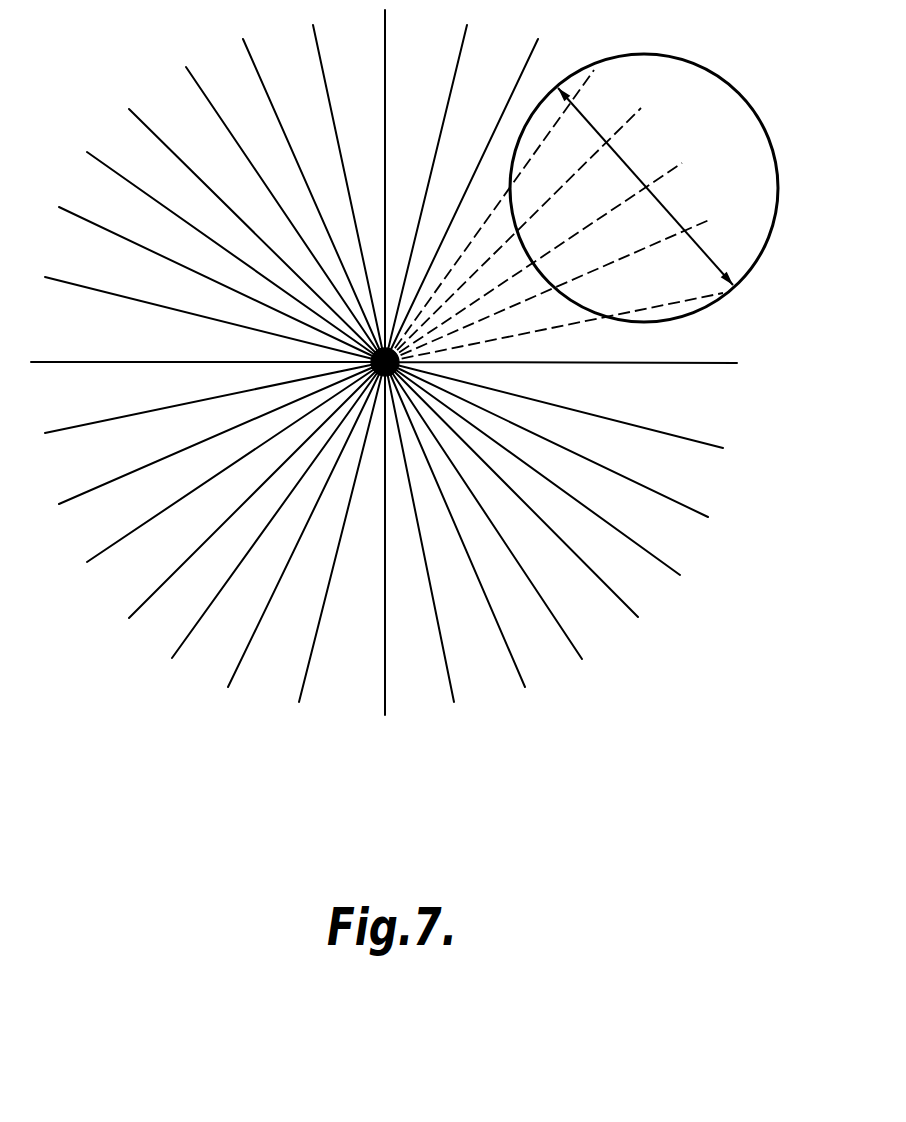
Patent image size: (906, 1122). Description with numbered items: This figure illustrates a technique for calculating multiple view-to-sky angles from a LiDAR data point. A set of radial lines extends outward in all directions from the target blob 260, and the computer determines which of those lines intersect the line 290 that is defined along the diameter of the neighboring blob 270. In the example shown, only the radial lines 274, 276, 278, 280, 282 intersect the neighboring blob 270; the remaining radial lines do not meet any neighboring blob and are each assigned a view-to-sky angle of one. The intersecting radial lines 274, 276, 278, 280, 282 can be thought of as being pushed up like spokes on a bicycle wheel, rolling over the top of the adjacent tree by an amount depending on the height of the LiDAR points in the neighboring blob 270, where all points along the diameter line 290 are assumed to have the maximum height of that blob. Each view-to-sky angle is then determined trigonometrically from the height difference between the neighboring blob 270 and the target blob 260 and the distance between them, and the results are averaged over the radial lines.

The target blob 260 is at (342, 368).
The neighboring blob 270 is at (730, 83).
The radial line 274 is at (664, 305).
The radial line 276 is at (698, 230).
The radial line 278 is at (663, 170).
The radial line 280 is at (630, 121).
The radial line 282 is at (583, 92).
The diameter line 290 is at (675, 203).